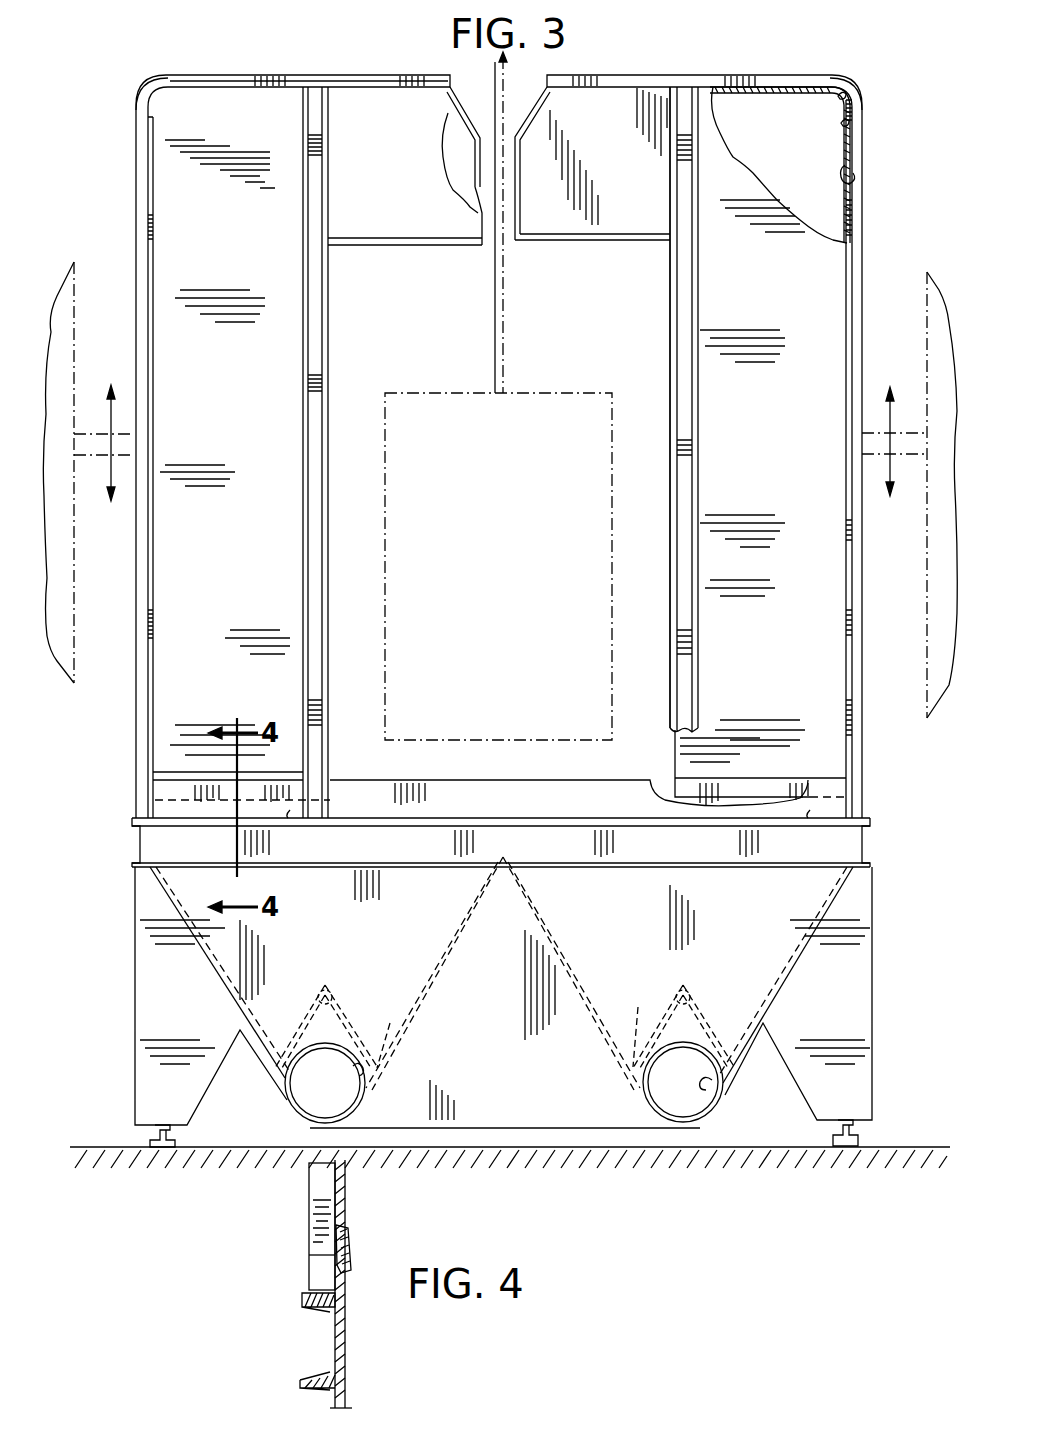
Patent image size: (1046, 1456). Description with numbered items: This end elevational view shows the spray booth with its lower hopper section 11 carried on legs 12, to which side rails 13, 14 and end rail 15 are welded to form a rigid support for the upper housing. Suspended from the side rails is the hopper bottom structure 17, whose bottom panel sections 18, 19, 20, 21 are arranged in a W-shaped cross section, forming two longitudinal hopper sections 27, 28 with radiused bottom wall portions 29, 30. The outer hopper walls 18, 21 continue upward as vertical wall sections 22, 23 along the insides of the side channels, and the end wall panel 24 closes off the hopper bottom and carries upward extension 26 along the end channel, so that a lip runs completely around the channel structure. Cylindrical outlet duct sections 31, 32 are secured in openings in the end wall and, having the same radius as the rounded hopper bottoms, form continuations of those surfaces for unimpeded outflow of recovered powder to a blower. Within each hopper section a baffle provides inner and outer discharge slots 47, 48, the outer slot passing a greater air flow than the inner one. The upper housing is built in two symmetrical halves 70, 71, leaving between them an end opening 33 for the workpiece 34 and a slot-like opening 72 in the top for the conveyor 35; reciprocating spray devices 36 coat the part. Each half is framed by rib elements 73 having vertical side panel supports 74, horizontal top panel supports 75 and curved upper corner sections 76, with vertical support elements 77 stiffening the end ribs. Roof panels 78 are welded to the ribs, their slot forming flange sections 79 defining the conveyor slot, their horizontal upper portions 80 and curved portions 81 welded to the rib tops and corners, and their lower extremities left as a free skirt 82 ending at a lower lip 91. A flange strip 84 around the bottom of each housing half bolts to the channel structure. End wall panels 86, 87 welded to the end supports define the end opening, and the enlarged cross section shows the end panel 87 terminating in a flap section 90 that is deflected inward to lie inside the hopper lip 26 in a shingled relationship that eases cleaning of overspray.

In FIG. 3, the lower section 11 is at (510, 997).
In FIG. 3, the legs 12 is at (135, 980).
In FIG. 3, the side rail 13 is at (865, 835).
In FIG. 3, the side rail 14 is at (140, 845).
In FIG. 3, the end rail 15 is at (408, 845).
In FIG. 4, the end rail 15 is at (330, 1335).
In FIG. 3, the hopper bottom structure 17 is at (425, 999).
In FIG. 3, the outer hopper wall 18 is at (222, 1000).
In FIG. 3, the bottom panel section 19 is at (434, 973).
In FIG. 3, the hopper bottom 20 is at (572, 962).
In FIG. 3, the outer hopper wall 21 is at (790, 962).
In FIG. 3, the vertical wall section 22 is at (848, 802).
In FIG. 3, the vertical wall section 23 is at (152, 790).
In FIG. 3, the end wall panel 24 is at (553, 1130).
In FIG. 3, the upward extension 26 is at (472, 790).
In FIG. 4, the upward extension 26 is at (335, 1255).
In FIG. 3, the hopper section 27 is at (316, 956).
In FIG. 3, the hopper section 28 is at (621, 973).
In FIG. 3, the radiused bottom wall portion 29 is at (357, 1122).
In FIG. 3, the radiused bottom wall portion 30 is at (648, 1115).
In FIG. 3, the outlet duct section 31 is at (360, 1075).
In FIG. 3, the outlet duct section 32 is at (712, 1088).
In FIG. 3, the end opening 33 is at (697, 302).
In FIG. 3, the workpiece 34 is at (522, 388).
In FIG. 3, the conveyor 35 is at (502, 323).
In FIG. 3, the reciprocating spray devices 36 is at (130, 425).
In FIG. 3, the inner discharge slot 47 is at (393, 1015).
In FIG. 3, the outer discharge slot 48 is at (296, 1015).
In FIG. 3, the housing half 70 is at (168, 187).
In FIG. 3, the housing half 71 is at (818, 292).
In FIG. 3, the slot-like opening 72 is at (507, 175).
In FIG. 3, the rib element 73 is at (205, 74).
In FIG. 4, the rib element 73 is at (287, 1226).
In FIG. 3, the vertical side panel support 74 is at (136, 610).
In FIG. 4, the vertical side panel support 74 is at (308, 1183).
In FIG. 3, the horizontal top panel support 75 is at (336, 85).
In FIG. 3, the upper corner section 76 is at (150, 92).
In FIG. 3, the vertical support element 77 is at (318, 342).
In FIG. 3, the roof panel 78 is at (730, 90).
In FIG. 3, the slot forming flange section 79 is at (462, 122).
In FIG. 3, the horizontal upper portion 80 is at (777, 90).
In FIG. 3, the curved portion 81 is at (843, 97).
In FIG. 3, the free skirt 82 is at (860, 124).
In FIG. 3, the flange strip 84 is at (275, 810).
In FIG. 4, the flange strip 84 is at (300, 1294).
In FIG. 3, the end wall panel 86 is at (372, 223).
In FIG. 3, the end wall panel 87 is at (283, 378).
In FIG. 4, the end wall panel 87 is at (342, 1172).
In FIG. 3, the flap section 90 is at (695, 780).
In FIG. 4, the flap section 90 is at (360, 1275).
In FIG. 3, the lower lip 91 is at (847, 187).